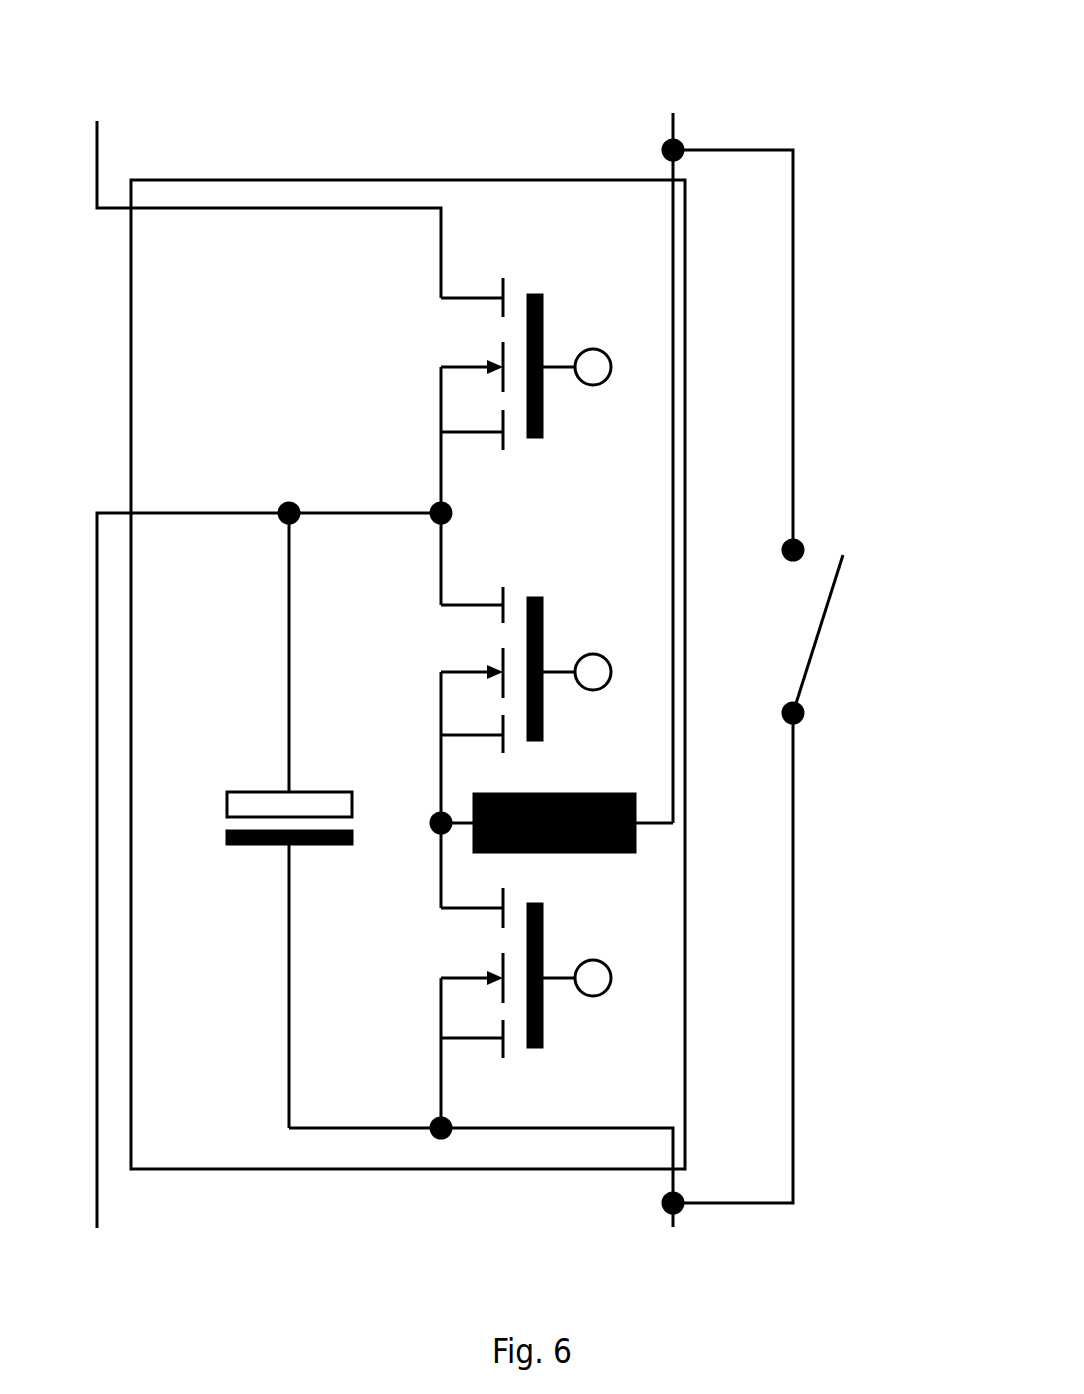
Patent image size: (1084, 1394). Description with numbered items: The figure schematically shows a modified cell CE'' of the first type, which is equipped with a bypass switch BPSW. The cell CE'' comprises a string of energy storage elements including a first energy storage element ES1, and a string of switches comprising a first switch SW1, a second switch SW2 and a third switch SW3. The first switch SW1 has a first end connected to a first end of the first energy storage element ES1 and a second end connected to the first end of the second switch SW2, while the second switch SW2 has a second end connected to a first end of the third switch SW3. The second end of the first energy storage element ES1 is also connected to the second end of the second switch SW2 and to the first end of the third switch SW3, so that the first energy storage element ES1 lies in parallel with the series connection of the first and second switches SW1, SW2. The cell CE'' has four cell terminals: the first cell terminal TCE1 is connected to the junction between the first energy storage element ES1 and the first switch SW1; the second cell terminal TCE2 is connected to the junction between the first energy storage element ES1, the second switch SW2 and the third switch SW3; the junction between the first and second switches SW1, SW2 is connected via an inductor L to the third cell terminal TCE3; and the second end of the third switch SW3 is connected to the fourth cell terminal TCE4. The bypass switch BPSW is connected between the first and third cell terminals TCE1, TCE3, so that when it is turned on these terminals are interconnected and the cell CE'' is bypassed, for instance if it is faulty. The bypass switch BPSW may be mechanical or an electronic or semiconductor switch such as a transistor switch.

The cell CE'' is at (531, 584).
The first cell terminal TCE1 is at (541, 993).
The second cell terminal TCE2 is at (249, 893).
The third cell terminal TCE3 is at (706, 448).
The fourth cell terminal TCE4 is at (250, 181).
The first switch SW1 is at (483, 973).
The second switch SW2 is at (483, 670).
The third switch SW3 is at (483, 364).
The first energy storage element ES1 is at (257, 818).
The inductor L is at (557, 844).
The bypass switch BPSW is at (864, 631).